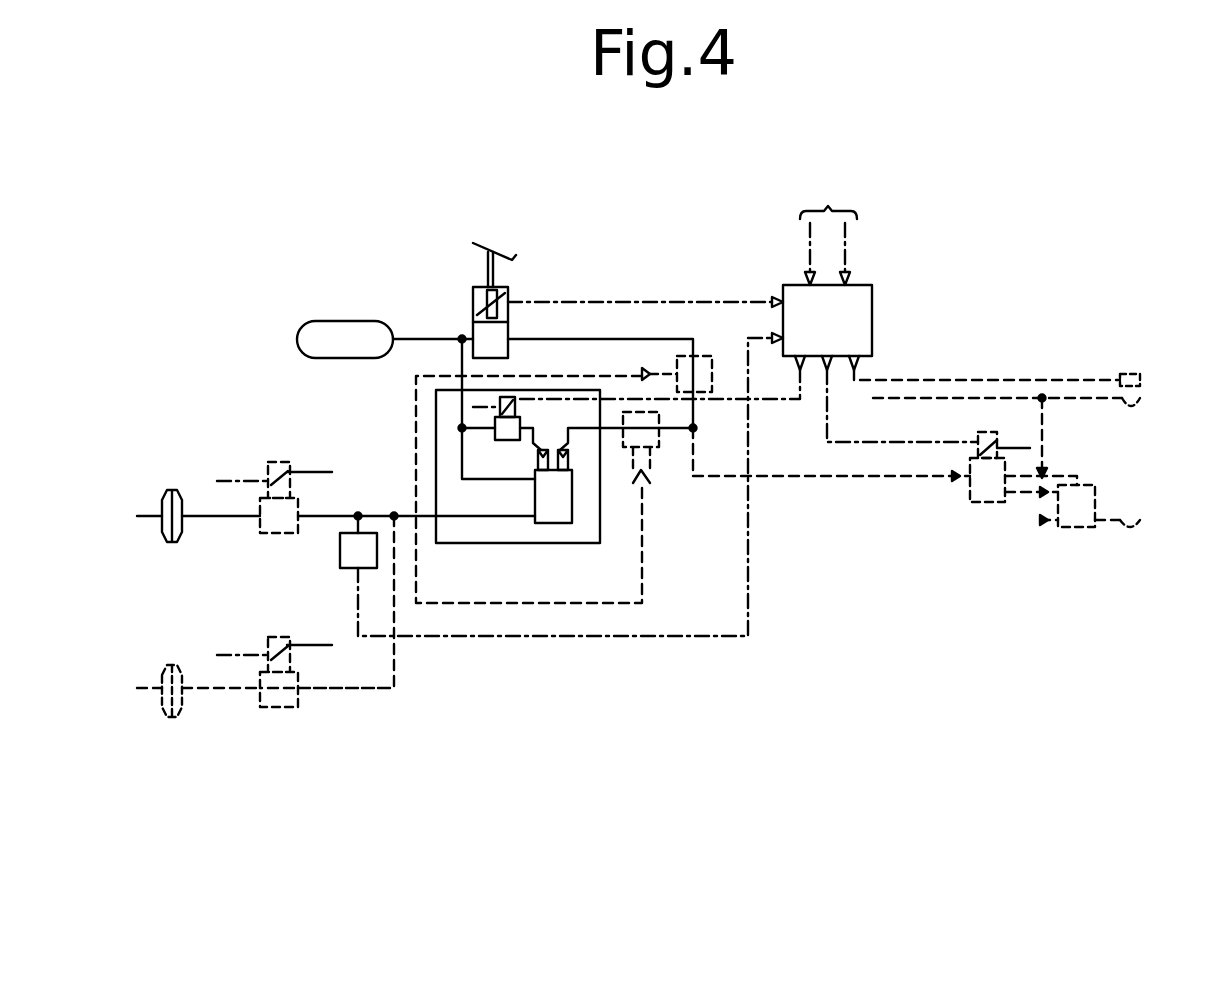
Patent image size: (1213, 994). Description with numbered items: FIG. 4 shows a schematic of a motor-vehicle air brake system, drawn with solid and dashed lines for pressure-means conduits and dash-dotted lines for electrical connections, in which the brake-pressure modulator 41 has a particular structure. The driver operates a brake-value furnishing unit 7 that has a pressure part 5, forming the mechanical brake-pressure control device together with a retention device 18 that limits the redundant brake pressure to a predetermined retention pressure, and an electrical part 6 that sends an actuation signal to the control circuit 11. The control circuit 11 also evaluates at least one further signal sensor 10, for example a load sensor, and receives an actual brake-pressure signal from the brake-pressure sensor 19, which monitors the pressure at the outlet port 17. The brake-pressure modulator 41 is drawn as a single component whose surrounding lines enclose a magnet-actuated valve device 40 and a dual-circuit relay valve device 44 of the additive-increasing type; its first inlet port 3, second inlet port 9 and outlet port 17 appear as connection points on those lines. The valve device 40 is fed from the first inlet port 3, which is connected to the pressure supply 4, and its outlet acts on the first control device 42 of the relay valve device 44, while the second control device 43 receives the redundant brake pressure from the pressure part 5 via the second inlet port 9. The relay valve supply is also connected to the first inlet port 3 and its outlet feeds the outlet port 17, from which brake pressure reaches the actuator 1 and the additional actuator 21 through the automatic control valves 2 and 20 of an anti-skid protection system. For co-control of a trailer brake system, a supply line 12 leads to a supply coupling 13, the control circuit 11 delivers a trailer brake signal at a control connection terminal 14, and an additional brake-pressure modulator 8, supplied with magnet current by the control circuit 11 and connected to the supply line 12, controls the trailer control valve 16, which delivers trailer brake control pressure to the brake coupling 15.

The actuator 1 is at (168, 490).
The automatic control valve 2 is at (272, 510).
The first inlet port 3 is at (443, 383).
The pressure supply 4 is at (325, 337).
The pressure part of the brake-value furnishing unit 5 is at (487, 338).
The electrical part of the brake-value furnishing unit 6 is at (480, 293).
The brake-value furnishing unit 7 is at (508, 238).
The brake-pressure modulator 8 is at (978, 517).
The second inlet port 9 is at (600, 388).
The signal sensor 10 is at (830, 206).
The control circuit 11 is at (852, 325).
The supply line 12 is at (913, 398).
The supply coupling 13 is at (1127, 398).
The control connection terminal 14 is at (1130, 374).
The brake coupling 15 is at (1133, 527).
The trailer control valve 16 is at (1075, 515).
The outlet port 17 is at (435, 517).
The retention device 18 is at (685, 390).
The brake-pressure sensor 19 is at (348, 557).
The automatic control valve 20 is at (280, 690).
The additional actuator 21 is at (170, 705).
The magnet-actuated valve device 40 is at (497, 417).
The brake-pressure modulator 41 is at (528, 389).
The first control device 42 is at (543, 433).
The second control device 43 is at (563, 437).
The dual-circuit relay valve device 44 is at (553, 513).